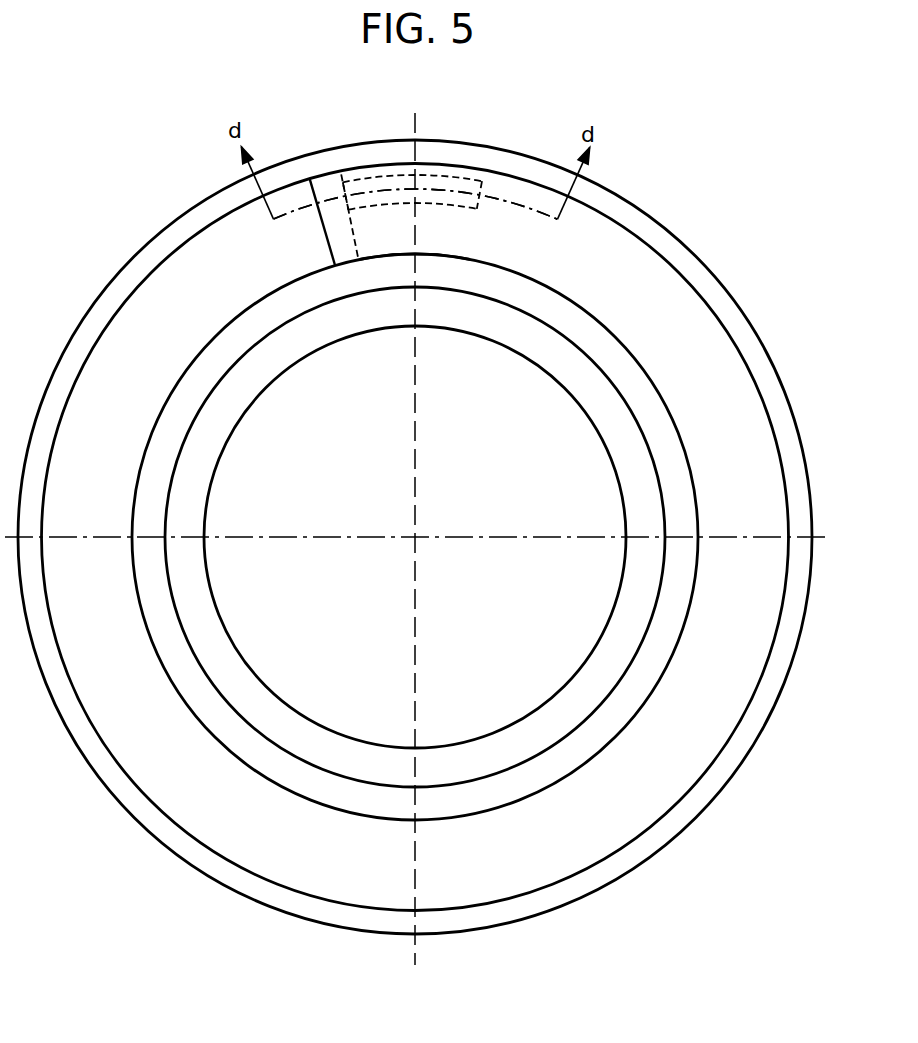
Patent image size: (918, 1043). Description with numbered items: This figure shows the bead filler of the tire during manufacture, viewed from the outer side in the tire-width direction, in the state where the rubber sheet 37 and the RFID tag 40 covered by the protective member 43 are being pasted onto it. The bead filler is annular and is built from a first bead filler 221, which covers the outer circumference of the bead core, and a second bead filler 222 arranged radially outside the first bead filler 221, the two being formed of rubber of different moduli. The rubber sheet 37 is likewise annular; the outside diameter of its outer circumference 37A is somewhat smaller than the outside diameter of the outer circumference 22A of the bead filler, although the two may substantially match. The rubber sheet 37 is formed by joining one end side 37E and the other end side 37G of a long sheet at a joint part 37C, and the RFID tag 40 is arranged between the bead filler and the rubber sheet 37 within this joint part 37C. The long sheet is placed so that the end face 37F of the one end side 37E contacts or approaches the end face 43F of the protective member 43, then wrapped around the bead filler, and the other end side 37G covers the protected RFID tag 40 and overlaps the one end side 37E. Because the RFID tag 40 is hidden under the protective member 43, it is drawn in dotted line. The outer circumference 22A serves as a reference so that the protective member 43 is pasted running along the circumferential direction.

The outer circumference of bead filler 22A is at (653, 217).
The second bead filler 222 is at (597, 198).
The first bead filler 221 is at (540, 737).
The rubber sheet 37 is at (650, 302).
The outer circumference of rubber sheet 37A is at (722, 323).
The joint part 37C is at (295, 140).
The one end side of rubber sheet 37E is at (315, 278).
The end face of one end side 37F is at (355, 234).
The other end side of rubber sheet 37G is at (413, 262).
The RFID tag 40 is at (418, 190).
The protective member 43 is at (470, 180).
The end face of protective member 43F is at (345, 187).